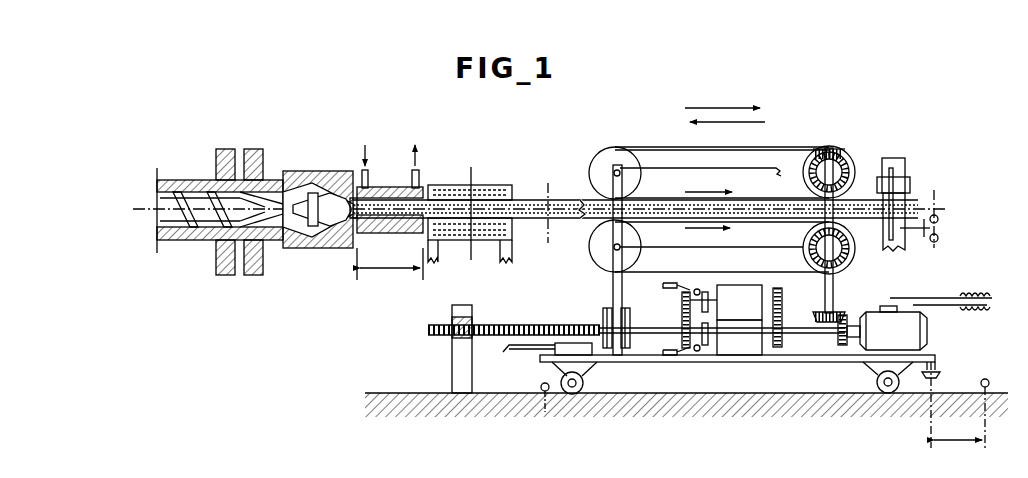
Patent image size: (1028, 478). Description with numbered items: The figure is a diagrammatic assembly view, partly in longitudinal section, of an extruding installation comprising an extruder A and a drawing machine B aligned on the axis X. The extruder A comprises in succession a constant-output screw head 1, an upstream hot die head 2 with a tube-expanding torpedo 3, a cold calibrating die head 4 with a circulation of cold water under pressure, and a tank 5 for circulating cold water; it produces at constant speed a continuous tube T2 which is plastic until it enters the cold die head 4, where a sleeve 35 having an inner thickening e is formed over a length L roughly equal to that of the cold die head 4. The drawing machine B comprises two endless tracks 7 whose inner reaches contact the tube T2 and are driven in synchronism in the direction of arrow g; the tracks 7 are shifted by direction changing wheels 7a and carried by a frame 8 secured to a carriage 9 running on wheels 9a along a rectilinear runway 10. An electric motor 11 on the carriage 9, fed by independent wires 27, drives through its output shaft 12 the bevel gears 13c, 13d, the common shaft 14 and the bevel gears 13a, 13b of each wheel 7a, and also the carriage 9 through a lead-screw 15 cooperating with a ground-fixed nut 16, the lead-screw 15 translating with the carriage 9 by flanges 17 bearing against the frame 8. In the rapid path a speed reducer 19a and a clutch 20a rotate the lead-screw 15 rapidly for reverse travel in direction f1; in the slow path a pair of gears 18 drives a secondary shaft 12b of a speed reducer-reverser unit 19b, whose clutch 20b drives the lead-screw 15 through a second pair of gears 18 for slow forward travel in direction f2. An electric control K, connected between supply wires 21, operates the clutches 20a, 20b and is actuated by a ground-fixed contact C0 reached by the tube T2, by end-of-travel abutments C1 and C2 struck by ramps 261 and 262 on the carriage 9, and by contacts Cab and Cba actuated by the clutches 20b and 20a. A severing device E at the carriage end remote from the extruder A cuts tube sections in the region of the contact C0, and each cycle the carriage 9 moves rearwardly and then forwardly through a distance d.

The constant-output screw head 1 is at (190, 244).
The upstream hot die head 2 is at (314, 248).
The tube-expanding torpedo 3 is at (334, 218).
The cold calibrating die head 4 is at (398, 202).
The tank for circulating cold water 5 is at (455, 242).
The endless tracks 7 is at (648, 146).
The direction changing wheels 7a is at (812, 152).
The frame 8 is at (613, 233).
The carriage 9 is at (772, 365).
The wheels 9a is at (893, 393).
The rectilinear runway 10 is at (640, 392).
The electric motor 11 is at (908, 320).
The output shaft 12 is at (850, 325).
The secondary drive shaft 12b is at (770, 290).
The bevel gear 13a is at (846, 170).
The bevel gear 13b is at (832, 150).
The bevel gear 13c is at (818, 318).
The bevel gear 13d is at (842, 346).
The common shaft 14 is at (826, 278).
The lead-screw 15 is at (496, 322).
The nut 16 is at (462, 366).
The flanges 17 is at (614, 312).
The pair of gears 18 is at (682, 322).
The speed reducer 19a is at (757, 344).
The speed reducer-reverser unit 19b is at (757, 308).
The clutch 20a is at (700, 350).
The clutch 20b is at (702, 296).
The electric current supply wires 21 is at (503, 352).
The projection or ramp 261 is at (548, 394).
The projection or ramp 262 is at (938, 378).
The wires 27 is at (946, 298).
The sleeve 35 is at (389, 190).
The extruder A is at (308, 168).
The drawing machine B is at (782, 142).
The sectioning or severing device E is at (898, 160).
The electric control K is at (570, 343).
The contact C0 is at (938, 229).
The fixed abutment / end-of-travel limiter C1 is at (542, 384).
The fixed abutment / end-of-travel limiter C2 is at (988, 381).
The contact Cab is at (675, 370).
The contact Cba is at (662, 293).
The continuous extruded tube T2 is at (571, 200).
The direction of reverse travel f1 is at (715, 122).
The direction of forward travel f2 is at (733, 102).
The direction of track movement g is at (720, 208).
The length L is at (390, 262).
The inner thickening e is at (407, 254).
The distance d is at (958, 427).
The axis X is at (968, 211).